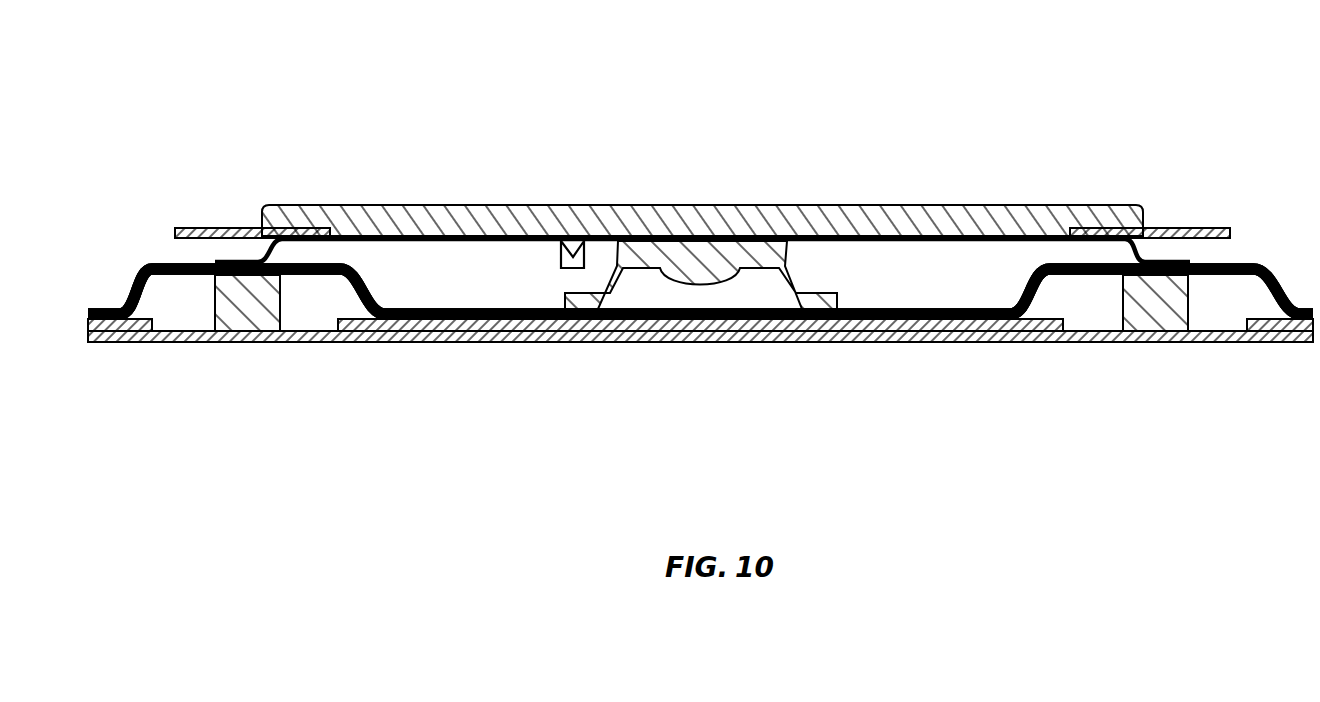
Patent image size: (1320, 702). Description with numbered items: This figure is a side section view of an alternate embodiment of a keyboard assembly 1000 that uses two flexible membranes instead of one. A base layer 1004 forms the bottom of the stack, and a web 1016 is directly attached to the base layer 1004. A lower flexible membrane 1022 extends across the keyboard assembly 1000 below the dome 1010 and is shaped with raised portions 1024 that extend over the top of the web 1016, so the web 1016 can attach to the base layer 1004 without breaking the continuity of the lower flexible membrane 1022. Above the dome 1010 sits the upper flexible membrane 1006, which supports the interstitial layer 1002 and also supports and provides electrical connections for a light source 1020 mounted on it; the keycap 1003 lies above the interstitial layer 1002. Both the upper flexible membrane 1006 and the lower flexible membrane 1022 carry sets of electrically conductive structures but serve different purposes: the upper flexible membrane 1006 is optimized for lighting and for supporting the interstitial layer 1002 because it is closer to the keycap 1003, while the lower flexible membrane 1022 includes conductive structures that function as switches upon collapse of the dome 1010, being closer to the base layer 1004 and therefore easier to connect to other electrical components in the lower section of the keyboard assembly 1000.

The keyboard assembly 1000 is at (700, 226).
The interstitial layer 1002 is at (1183, 229).
The keycap 1003 is at (500, 213).
The base layer 1004 is at (1222, 341).
The upper flexible membrane 1006 is at (1180, 251).
The dome 1010 is at (780, 255).
The web 1016 is at (1135, 305).
The light source 1020 is at (565, 252).
The lower flexible membrane 1022 is at (700, 223).
The raised portions 1024 is at (160, 262).